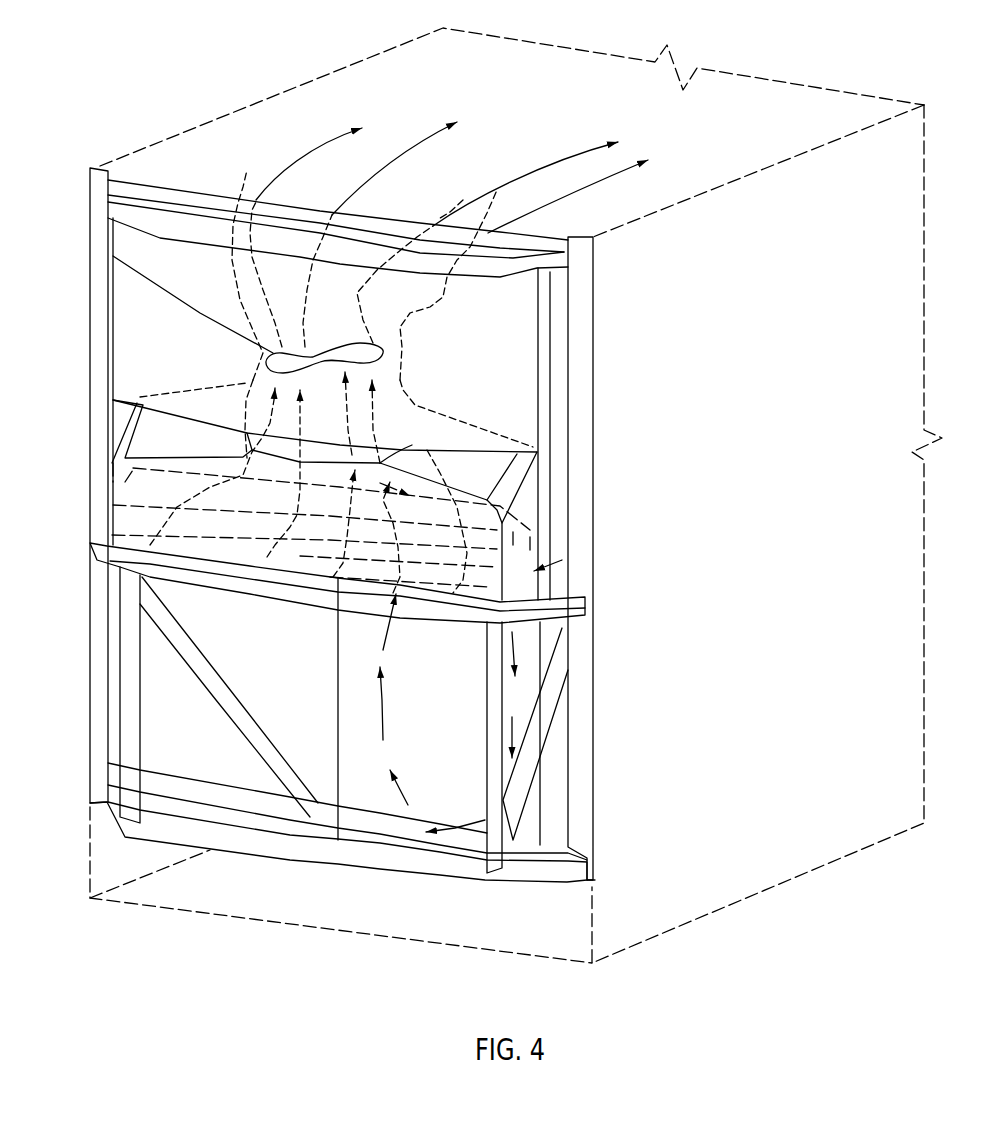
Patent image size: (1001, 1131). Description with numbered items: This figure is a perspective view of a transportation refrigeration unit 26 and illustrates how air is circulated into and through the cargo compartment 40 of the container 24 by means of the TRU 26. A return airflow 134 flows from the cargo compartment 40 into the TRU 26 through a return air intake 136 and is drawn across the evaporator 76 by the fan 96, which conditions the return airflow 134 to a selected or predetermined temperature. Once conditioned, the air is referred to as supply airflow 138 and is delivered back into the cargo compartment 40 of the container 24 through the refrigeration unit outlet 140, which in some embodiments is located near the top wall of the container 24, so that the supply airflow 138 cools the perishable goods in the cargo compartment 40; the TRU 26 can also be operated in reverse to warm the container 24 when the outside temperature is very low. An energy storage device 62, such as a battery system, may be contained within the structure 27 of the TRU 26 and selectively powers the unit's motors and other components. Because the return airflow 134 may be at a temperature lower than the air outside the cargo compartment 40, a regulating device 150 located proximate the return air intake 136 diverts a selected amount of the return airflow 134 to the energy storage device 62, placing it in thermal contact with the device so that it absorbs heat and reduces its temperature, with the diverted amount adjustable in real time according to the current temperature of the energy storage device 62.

The container 24 is at (310, 72).
The transportation refrigeration unit 26 is at (57, 393).
The structure 27 is at (90, 465).
The cargo compartment 40 is at (757, 559).
The energy storage device 62 is at (400, 740).
The evaporator 76 is at (167, 493).
The fan 96 is at (113, 256).
The return airflow 134 is at (596, 534).
The return air intake 136 is at (624, 558).
The supply airflow 138 is at (306, 160).
The refrigeration unit outlet 140 is at (242, 218).
The regulating device 150 is at (350, 548).